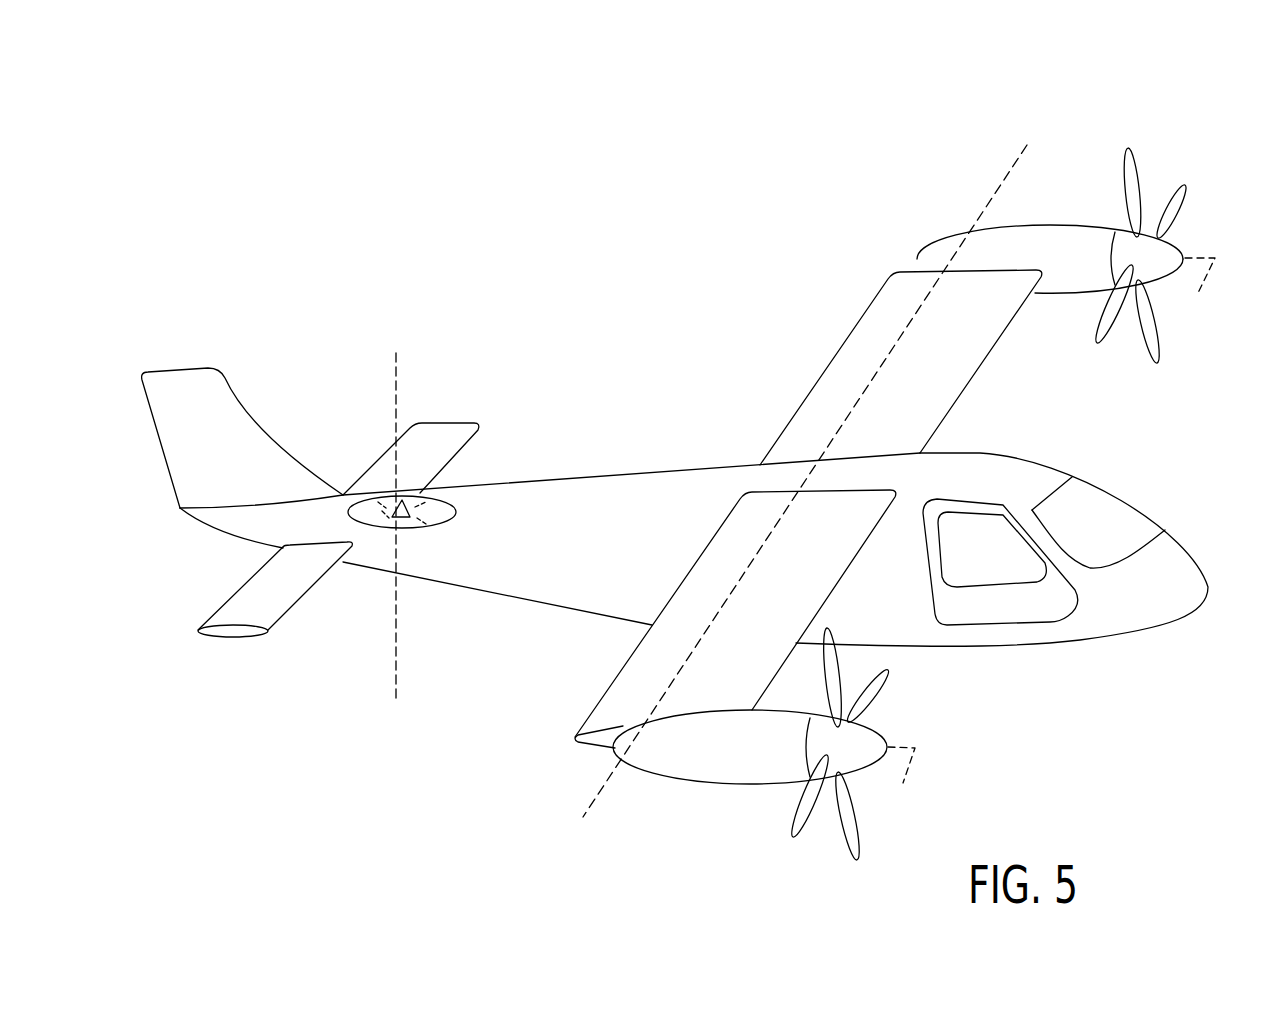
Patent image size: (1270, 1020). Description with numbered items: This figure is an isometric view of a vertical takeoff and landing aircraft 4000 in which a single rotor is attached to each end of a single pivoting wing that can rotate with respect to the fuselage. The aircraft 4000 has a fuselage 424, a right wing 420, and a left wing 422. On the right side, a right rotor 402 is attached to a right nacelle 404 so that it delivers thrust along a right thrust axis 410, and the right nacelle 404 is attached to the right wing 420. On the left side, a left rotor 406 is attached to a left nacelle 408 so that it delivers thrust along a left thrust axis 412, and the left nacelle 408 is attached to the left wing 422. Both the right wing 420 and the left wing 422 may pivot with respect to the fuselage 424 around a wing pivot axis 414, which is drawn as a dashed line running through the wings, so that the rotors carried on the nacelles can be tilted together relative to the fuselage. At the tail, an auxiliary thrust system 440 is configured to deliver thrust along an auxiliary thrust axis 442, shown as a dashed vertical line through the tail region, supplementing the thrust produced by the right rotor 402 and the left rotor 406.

The vertical takeoff and landing aircraft 4000 is at (1200, 116).
The right rotor 402 is at (837, 830).
The right nacelle 404 is at (730, 767).
The left rotor 406 is at (1150, 350).
The left nacelle 408 is at (1057, 242).
The right thrust axis 410 is at (902, 781).
The left thrust axis 412 is at (1200, 292).
The wing pivot axis 414 is at (603, 787).
The right wing 420 is at (620, 696).
The left wing 422 is at (867, 322).
The fuselage 424 is at (647, 490).
The auxiliary thrust system 440 is at (418, 496).
The auxiliary thrust axis 442 is at (400, 410).